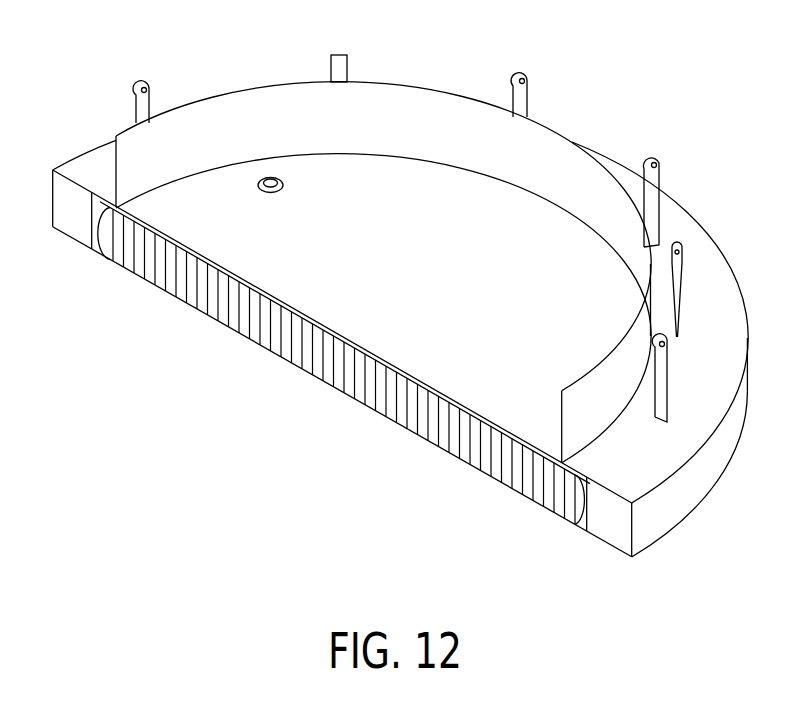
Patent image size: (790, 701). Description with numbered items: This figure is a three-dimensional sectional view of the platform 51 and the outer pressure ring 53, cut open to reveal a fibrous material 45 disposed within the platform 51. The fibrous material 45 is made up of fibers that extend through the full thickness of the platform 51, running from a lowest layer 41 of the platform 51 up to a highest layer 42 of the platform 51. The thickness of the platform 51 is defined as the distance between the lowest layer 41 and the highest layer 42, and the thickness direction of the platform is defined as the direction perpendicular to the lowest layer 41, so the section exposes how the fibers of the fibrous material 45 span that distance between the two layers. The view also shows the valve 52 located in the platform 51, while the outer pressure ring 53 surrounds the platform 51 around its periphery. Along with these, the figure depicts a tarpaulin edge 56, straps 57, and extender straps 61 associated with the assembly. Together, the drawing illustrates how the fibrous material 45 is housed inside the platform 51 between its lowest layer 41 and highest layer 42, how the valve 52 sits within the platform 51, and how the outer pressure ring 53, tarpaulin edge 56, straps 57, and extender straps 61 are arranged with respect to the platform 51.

The lowest layer 41 is at (400, 424).
The highest layer 42 is at (222, 268).
The fibrous material 45 is at (300, 342).
The platform 51 is at (413, 236).
The valve 52 is at (270, 178).
The outer pressure ring 53 is at (82, 230).
The tarpaulin edge 56 is at (358, 138).
The straps 57 is at (668, 362).
The extender straps 61 is at (658, 205).